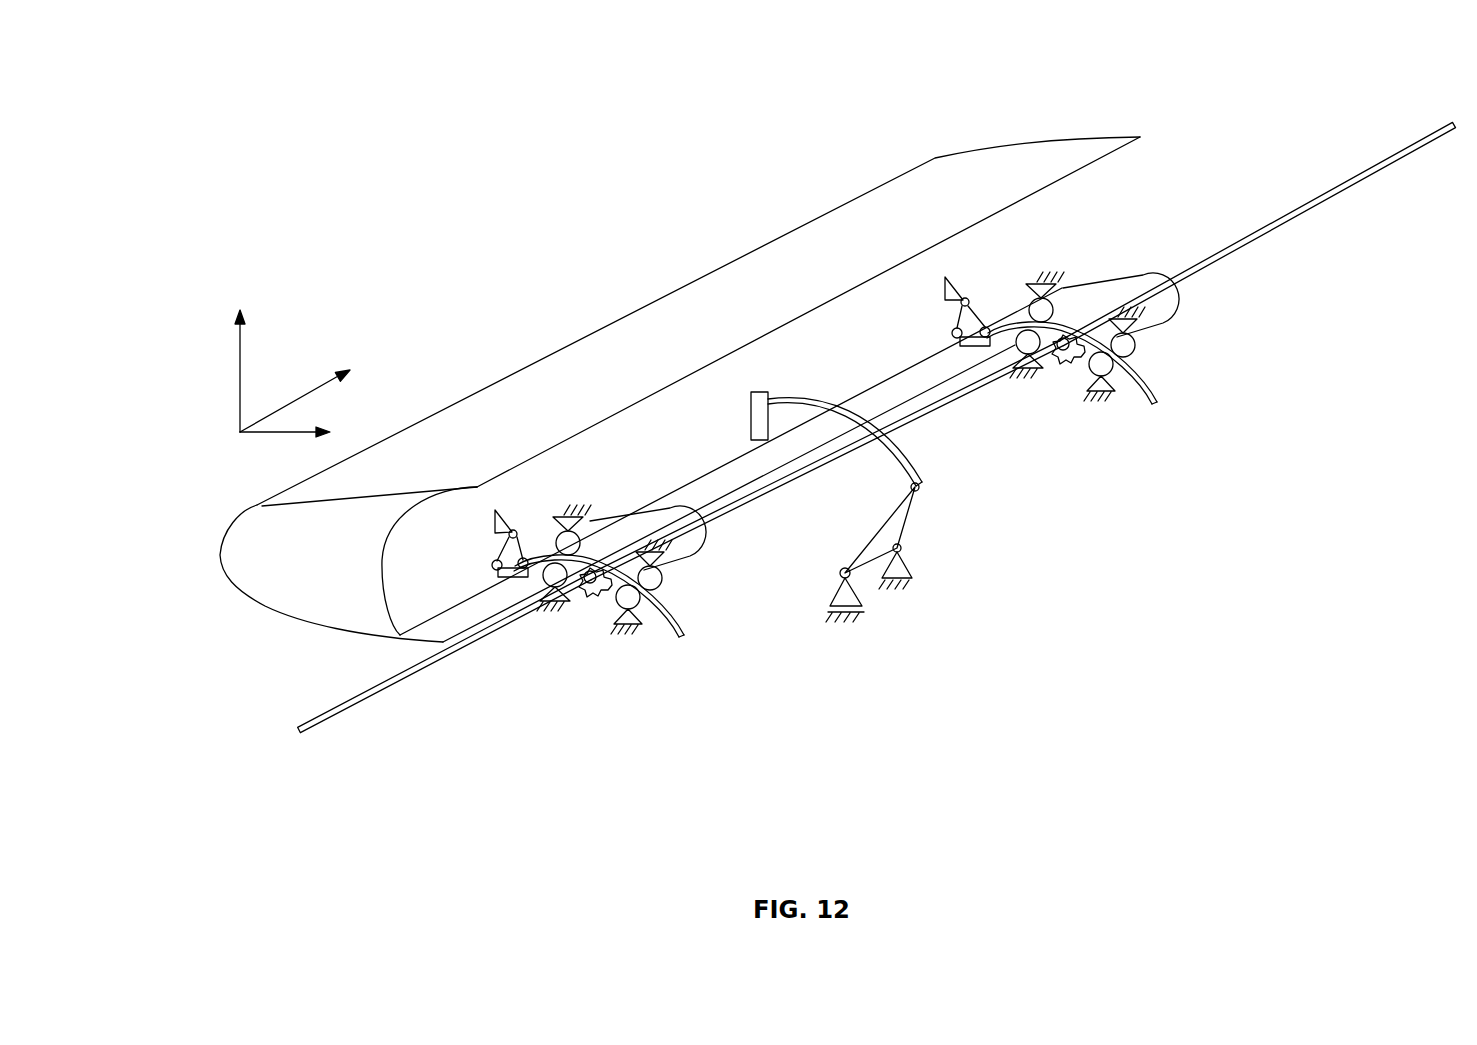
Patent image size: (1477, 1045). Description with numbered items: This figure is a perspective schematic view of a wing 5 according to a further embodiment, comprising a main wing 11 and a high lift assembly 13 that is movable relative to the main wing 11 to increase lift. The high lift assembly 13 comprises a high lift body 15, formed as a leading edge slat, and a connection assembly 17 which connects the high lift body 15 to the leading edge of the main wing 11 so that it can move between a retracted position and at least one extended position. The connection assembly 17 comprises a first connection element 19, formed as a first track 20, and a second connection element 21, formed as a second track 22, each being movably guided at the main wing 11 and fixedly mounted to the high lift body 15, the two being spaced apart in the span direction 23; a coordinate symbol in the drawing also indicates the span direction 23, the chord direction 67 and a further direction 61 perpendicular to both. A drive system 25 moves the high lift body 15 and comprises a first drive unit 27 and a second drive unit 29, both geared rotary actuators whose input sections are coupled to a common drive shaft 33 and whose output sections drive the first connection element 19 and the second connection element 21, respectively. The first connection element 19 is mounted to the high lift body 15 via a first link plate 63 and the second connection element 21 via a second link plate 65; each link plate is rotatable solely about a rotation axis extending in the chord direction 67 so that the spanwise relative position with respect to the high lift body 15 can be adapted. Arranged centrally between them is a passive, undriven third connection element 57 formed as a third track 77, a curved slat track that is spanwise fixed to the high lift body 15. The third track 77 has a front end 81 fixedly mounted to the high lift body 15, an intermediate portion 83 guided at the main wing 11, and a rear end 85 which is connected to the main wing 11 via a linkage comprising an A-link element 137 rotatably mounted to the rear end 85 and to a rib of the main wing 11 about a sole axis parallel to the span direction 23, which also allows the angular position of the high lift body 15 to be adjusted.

The wing 5 is at (172, 236).
The main wing 11 is at (1120, 541).
The high lift assembly 13 is at (1198, 86).
The high lift body 15 is at (703, 339).
The connection assembly 17 is at (1372, 313).
The first connection element 19 is at (645, 596).
The first track 20 is at (683, 612).
The second connection element 21 is at (1120, 363).
The second track 22 is at (1120, 363).
The span direction 23 is at (312, 388).
The drive system 25 is at (871, 451).
The first drive unit 27 is at (590, 608).
The second drive unit 29 is at (1147, 290).
The drive shaft 33 is at (1310, 215).
The third connection element 57 is at (845, 418).
The vertical direction 61 is at (240, 372).
The first link plate 63 is at (500, 557).
The second link plate 65 is at (968, 315).
The chord direction 67 is at (295, 432).
The third track 77 is at (856, 406).
The front end 81 is at (778, 400).
The intermediate portion 83 is at (890, 418).
The rear end 85 is at (922, 470).
The A-link element 137 is at (900, 520).